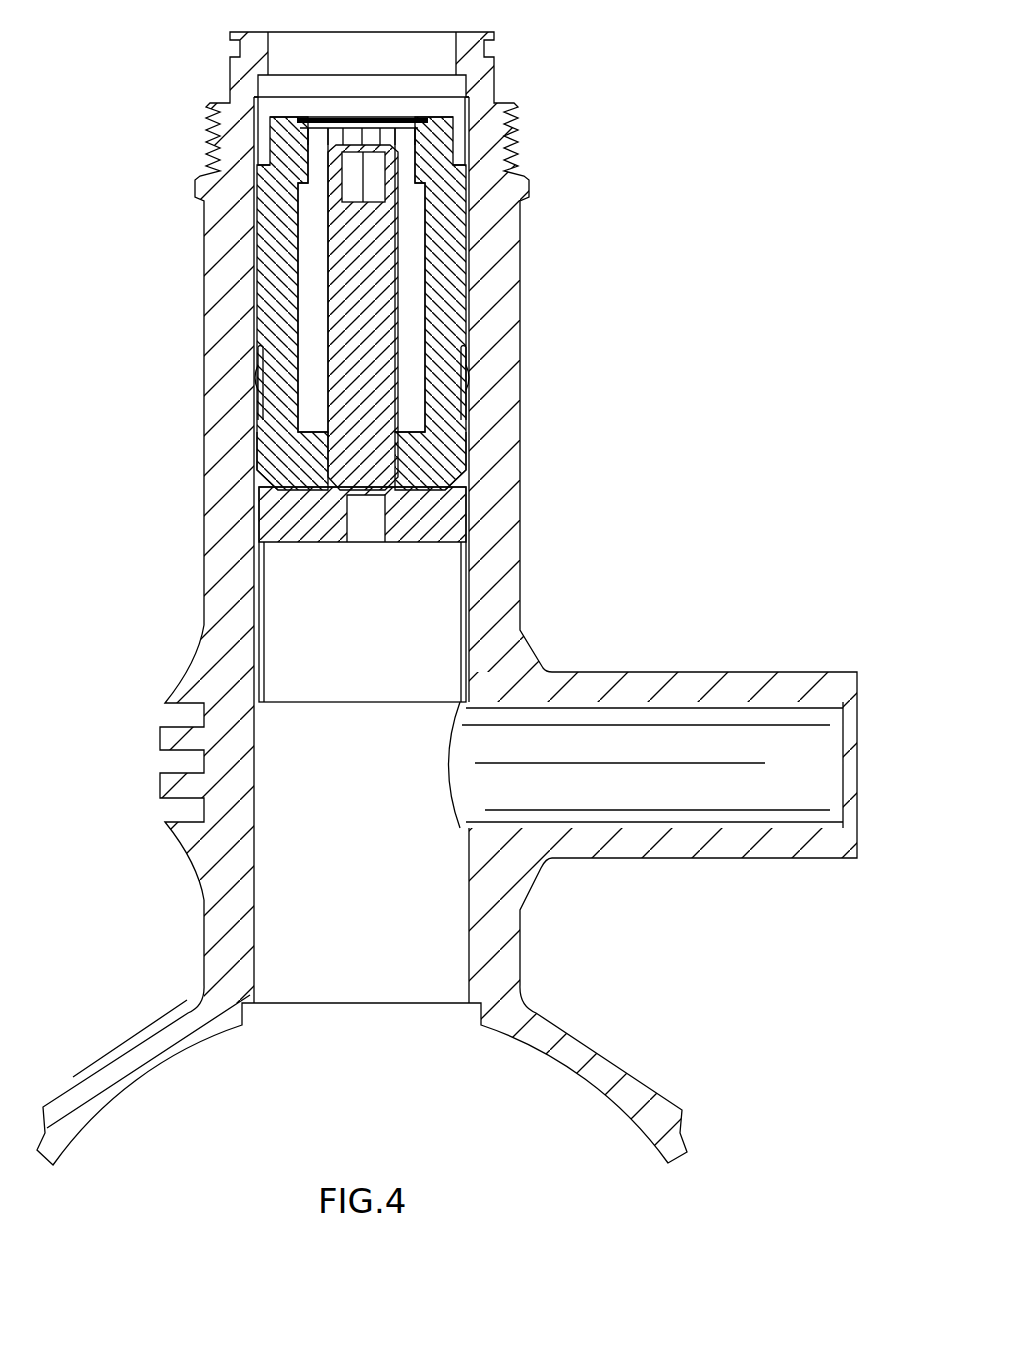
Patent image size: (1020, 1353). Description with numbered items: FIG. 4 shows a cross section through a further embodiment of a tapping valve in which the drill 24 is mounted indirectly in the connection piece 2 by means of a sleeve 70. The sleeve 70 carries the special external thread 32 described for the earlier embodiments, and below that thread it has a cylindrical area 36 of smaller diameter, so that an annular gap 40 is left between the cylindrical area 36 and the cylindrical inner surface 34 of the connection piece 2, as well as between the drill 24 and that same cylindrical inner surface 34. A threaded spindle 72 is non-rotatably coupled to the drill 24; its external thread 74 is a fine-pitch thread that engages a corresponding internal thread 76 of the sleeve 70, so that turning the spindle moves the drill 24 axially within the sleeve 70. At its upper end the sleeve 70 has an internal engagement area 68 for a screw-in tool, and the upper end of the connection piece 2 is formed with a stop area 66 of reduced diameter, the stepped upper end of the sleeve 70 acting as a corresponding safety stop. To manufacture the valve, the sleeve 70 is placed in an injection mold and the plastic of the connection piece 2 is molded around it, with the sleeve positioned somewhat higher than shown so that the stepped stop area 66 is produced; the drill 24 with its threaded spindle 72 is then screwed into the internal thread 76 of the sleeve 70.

The connection piece 2 is at (212, 220).
The drill 24 is at (473, 640).
The special external thread 32 is at (257, 292).
The cylindrical inner surface 34 is at (262, 350).
The cylindrical area 36 is at (266, 408).
The annular gap 40 is at (262, 440).
The stop area 66 is at (485, 82).
The internal engagement area 68 is at (445, 145).
The sleeve 70 is at (445, 262).
The threaded spindle 72 is at (367, 315).
The external thread 74 is at (397, 397).
The internal thread 76 is at (430, 466).